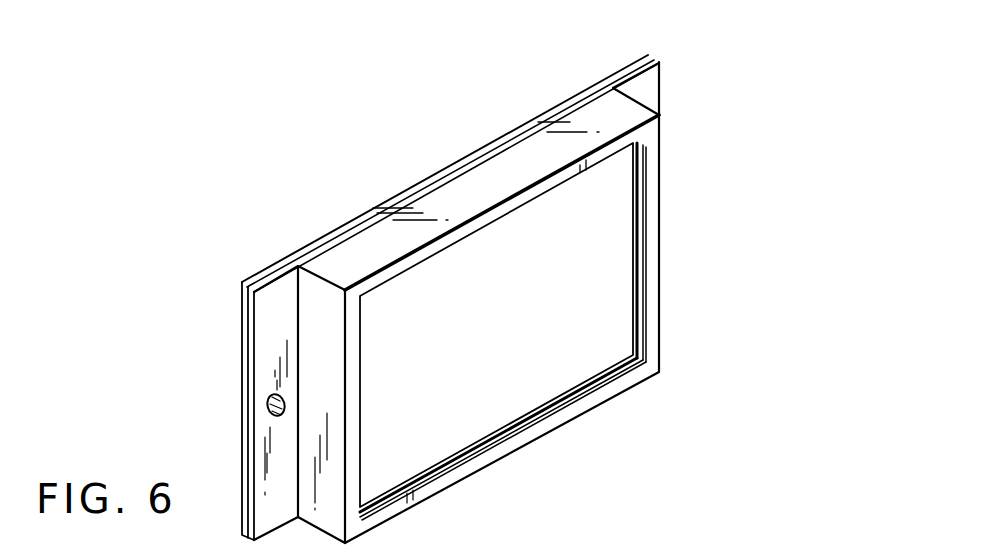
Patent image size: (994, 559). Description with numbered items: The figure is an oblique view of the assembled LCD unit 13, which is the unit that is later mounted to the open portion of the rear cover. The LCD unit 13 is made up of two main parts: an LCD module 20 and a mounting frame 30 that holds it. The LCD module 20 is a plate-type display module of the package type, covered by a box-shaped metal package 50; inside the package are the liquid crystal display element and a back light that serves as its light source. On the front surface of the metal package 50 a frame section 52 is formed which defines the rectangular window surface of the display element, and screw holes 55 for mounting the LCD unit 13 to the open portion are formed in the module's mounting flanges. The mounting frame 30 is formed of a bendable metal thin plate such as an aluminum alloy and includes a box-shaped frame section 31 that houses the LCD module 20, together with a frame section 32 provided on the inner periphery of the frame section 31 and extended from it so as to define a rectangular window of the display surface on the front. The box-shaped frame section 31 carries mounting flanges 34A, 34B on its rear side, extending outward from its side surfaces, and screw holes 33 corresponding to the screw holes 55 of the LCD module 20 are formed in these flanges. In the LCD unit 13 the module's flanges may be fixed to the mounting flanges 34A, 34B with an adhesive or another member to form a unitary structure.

The LCD unit 13 is at (618, 58).
The LCD module 20 is at (417, 450).
The mounting frame 30 is at (363, 241).
The box-shaped frame section 31 is at (532, 150).
The frame section 32 is at (545, 425).
The screw holes 33 is at (226, 405).
The screw holes 55 is at (267, 402).
The mounting flange 34A is at (271, 320).
The mounting flange 34B is at (648, 90).
The box-shaped metal package 50 is at (446, 164).
The frame section 52 is at (643, 190).